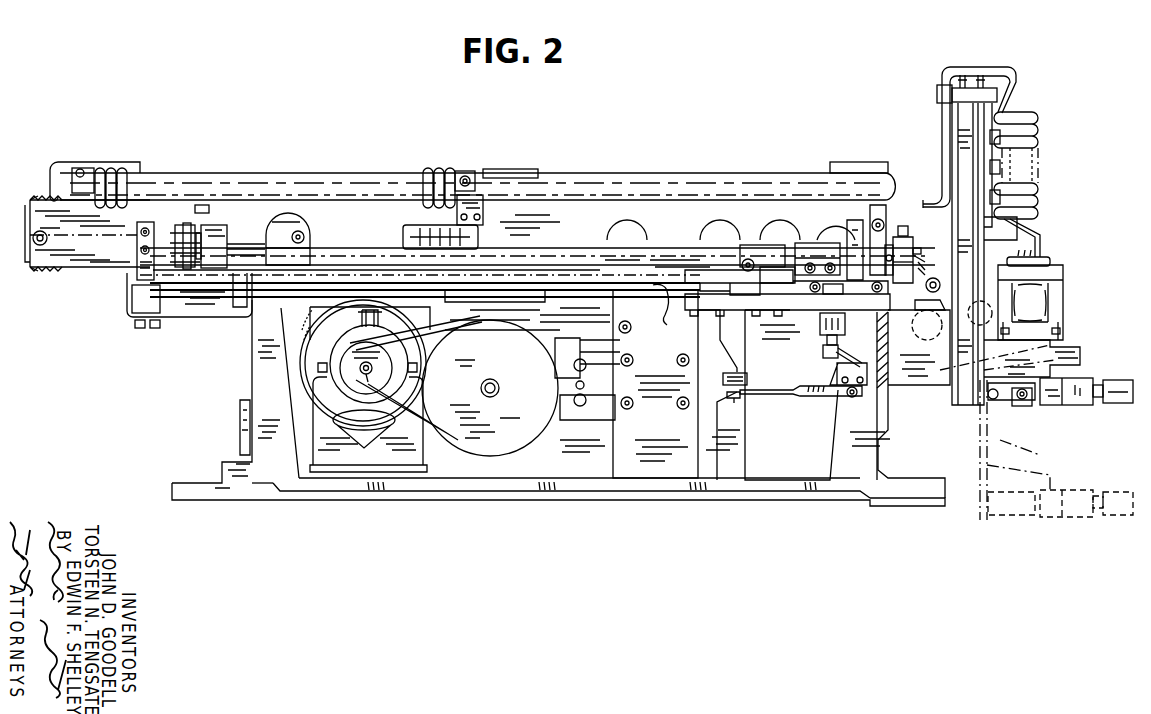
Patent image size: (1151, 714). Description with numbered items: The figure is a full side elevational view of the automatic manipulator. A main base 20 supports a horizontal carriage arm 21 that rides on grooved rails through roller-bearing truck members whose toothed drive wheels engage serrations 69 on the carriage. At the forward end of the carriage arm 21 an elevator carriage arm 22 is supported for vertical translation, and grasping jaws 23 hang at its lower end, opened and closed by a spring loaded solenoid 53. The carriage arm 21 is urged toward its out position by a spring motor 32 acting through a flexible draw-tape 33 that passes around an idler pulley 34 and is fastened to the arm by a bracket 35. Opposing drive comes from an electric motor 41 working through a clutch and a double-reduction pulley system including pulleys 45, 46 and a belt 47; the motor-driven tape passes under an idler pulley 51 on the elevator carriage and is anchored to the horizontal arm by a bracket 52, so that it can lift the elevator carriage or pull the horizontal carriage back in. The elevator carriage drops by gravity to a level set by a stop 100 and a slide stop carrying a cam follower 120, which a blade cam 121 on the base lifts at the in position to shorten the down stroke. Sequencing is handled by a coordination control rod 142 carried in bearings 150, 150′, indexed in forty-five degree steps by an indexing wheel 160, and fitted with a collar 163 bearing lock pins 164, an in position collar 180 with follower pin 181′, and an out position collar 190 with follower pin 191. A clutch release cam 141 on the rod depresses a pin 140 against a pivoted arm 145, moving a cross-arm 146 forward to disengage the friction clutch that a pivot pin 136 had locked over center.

The main base 20 is at (274, 484).
The carriage arm 21 is at (90, 266).
The elevator carriage arm 22 is at (977, 426).
The grasping jaws 23 is at (1117, 386).
The spring motor 32 is at (610, 273).
The flexible draw-tape 33 is at (223, 308).
The idler pulley 34 is at (668, 308).
The bracket 35 is at (137, 264).
The electric motor 41 is at (325, 330).
The pulley 45 is at (510, 352).
The pulley 46 is at (356, 378).
The belt 47 is at (415, 392).
The idler pulley 51 is at (923, 331).
The bracket 52 is at (930, 290).
The spring loaded solenoid 53 is at (1050, 308).
The serrations 69 is at (40, 198).
The stop 100 is at (1000, 158).
The cam follower 120 is at (986, 346).
The blade cam 121 is at (931, 370).
The pivot pin 136 is at (734, 406).
The pin 140 is at (826, 346).
The clutch release cam 141 is at (785, 242).
The coordination control rod 142 is at (525, 254).
The pivoted arm 145 is at (824, 355).
The cross-arm 146 is at (803, 396).
The bearing 150 is at (207, 244).
The bearing 150′ is at (868, 212).
The indexing wheel 160 is at (183, 238).
The collar 163 is at (898, 243).
The lock pin 164 is at (922, 205).
The in position collar 180 is at (770, 250).
The follower pin 181′ is at (745, 277).
The out position collar 190 is at (306, 250).
The follower pin 191 is at (299, 231).